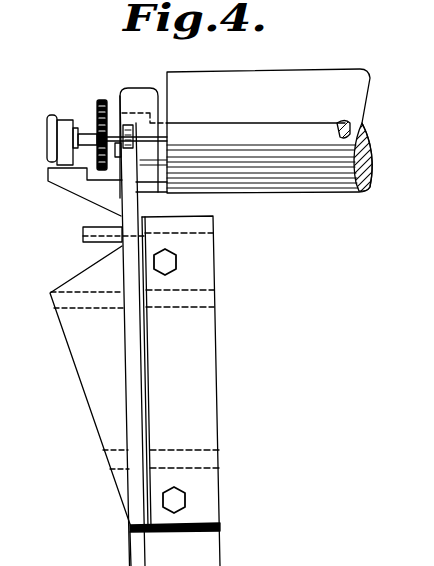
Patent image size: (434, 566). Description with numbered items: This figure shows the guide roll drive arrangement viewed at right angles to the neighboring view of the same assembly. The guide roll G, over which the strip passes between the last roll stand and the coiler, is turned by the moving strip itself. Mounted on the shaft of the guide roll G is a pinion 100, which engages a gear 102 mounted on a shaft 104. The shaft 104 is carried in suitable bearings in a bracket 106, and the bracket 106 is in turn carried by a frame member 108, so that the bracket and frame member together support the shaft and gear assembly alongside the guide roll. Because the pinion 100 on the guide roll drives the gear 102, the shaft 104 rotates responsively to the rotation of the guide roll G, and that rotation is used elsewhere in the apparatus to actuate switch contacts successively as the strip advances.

The guide roll G is at (274, 79).
The pinion 100 is at (95, 118).
The gear 102 is at (101, 101).
The shaft 104 is at (113, 172).
The bracket 106 is at (97, 196).
The frame member 108 is at (203, 360).